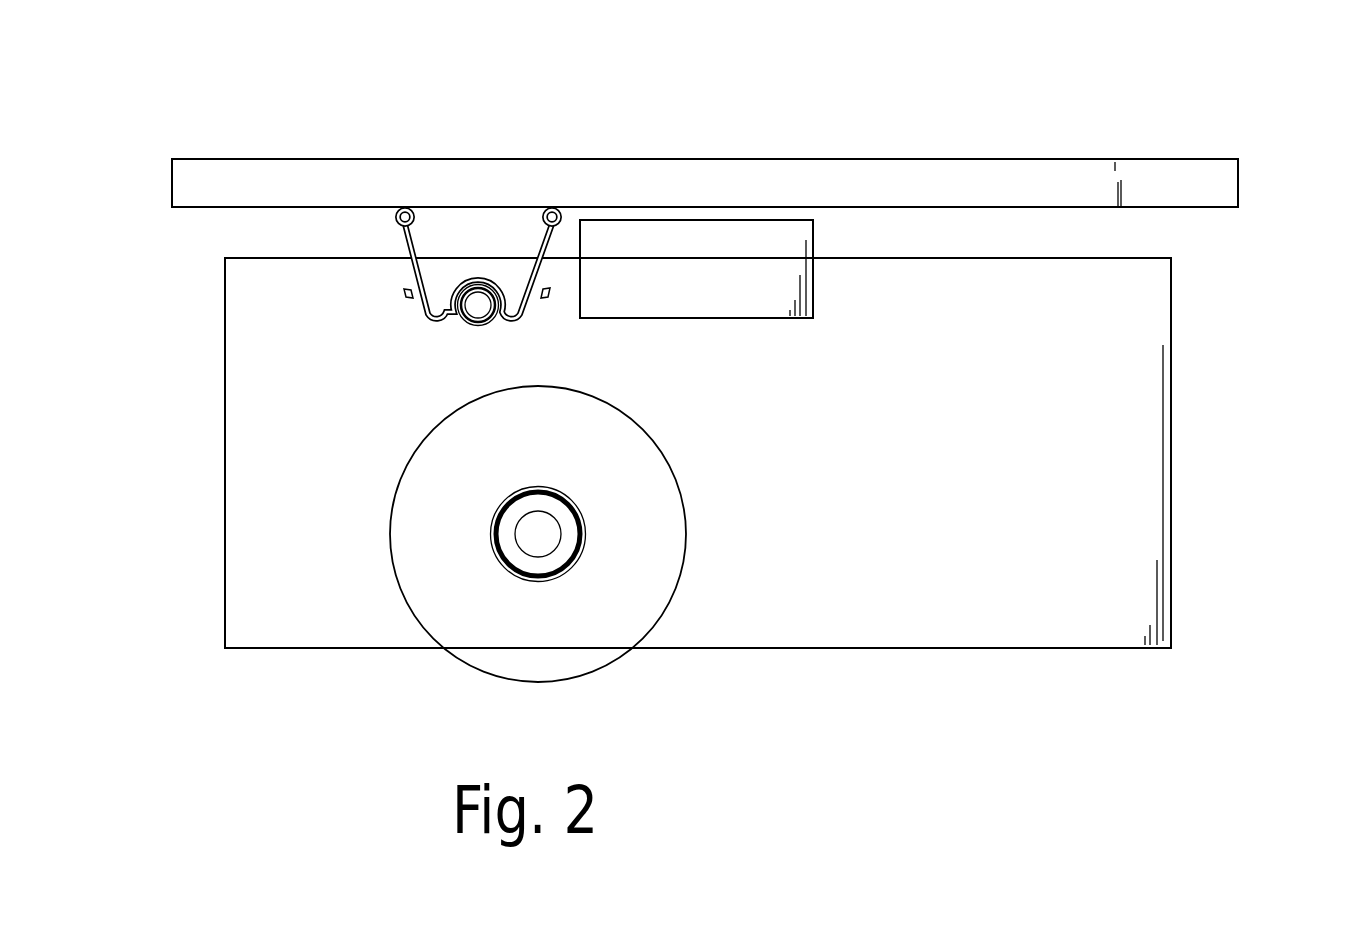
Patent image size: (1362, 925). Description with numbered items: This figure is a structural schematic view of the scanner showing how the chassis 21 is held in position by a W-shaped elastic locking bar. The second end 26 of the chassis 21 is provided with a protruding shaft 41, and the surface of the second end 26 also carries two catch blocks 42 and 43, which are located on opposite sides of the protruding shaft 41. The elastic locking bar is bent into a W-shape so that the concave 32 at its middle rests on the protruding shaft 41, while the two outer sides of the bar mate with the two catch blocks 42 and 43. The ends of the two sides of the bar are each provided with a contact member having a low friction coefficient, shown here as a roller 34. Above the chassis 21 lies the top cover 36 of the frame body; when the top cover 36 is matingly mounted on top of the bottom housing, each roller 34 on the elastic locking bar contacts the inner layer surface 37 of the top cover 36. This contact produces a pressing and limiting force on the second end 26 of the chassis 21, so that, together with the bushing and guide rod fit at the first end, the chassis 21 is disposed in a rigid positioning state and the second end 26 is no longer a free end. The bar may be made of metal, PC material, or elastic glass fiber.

The chassis 21 is at (1191, 425).
The second end 26 is at (323, 623).
The concave 32 is at (478, 280).
The roller 34 is at (403, 204).
The top cover 36 is at (965, 168).
The inner layer surface 37 is at (258, 207).
The protruding shaft 41 is at (477, 312).
The catch block 42 is at (403, 292).
The catch block 43 is at (549, 292).